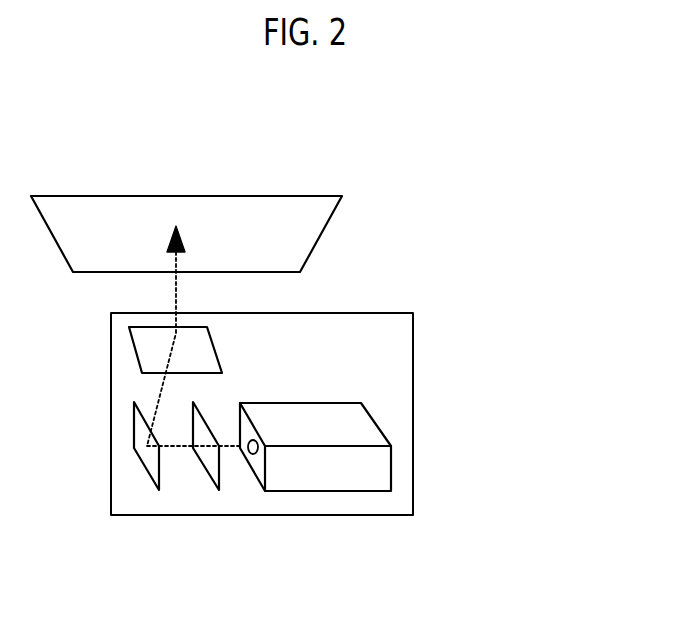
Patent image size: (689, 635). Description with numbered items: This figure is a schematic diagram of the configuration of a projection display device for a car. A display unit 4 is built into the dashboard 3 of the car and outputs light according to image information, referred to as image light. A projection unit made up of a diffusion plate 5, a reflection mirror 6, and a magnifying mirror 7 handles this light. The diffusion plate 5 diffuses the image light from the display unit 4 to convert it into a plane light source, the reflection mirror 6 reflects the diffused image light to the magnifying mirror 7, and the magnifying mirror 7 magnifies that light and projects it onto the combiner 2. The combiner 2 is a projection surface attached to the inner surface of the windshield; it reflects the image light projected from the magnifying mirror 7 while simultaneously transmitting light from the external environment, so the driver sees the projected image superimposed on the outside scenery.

The combiner 2 is at (292, 208).
The dashboard 3 is at (411, 387).
The display unit 4 is at (392, 474).
The diffusion plate 5 is at (220, 478).
The reflection mirror 6 is at (162, 475).
The magnifying mirror 7 is at (198, 362).